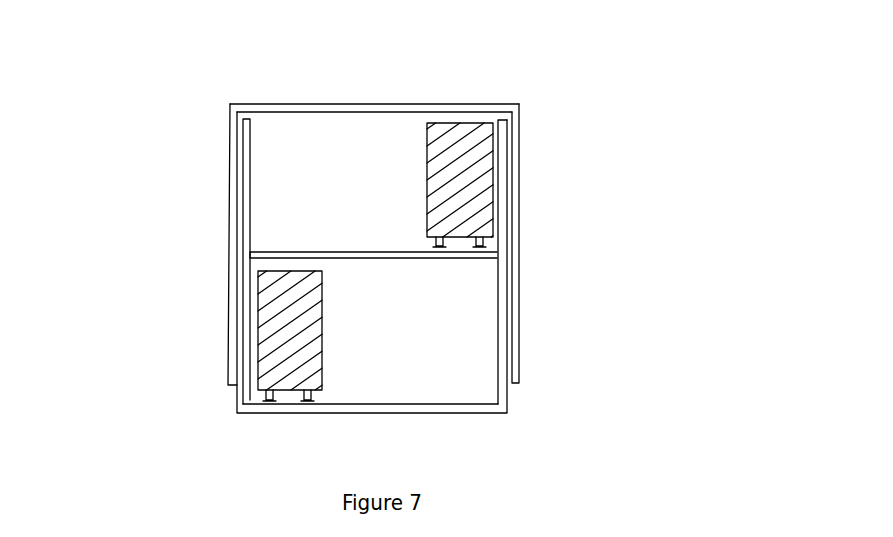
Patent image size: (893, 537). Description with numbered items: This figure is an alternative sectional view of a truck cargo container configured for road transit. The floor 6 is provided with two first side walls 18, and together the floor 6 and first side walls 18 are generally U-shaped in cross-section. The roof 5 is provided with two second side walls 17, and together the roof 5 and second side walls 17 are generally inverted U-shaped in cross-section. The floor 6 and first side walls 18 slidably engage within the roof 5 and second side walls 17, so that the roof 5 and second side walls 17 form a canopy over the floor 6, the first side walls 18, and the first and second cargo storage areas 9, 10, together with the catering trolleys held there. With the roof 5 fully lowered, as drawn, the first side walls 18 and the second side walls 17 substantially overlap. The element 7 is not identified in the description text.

The roof 5 is at (375, 103).
The floor 6 is at (472, 418).
The shelf 7 is at (418, 262).
The first cargo storage area 9 is at (448, 367).
The second cargo storage area 10 is at (283, 139).
The second side walls 17 is at (521, 178).
The first side walls 18 is at (254, 220).